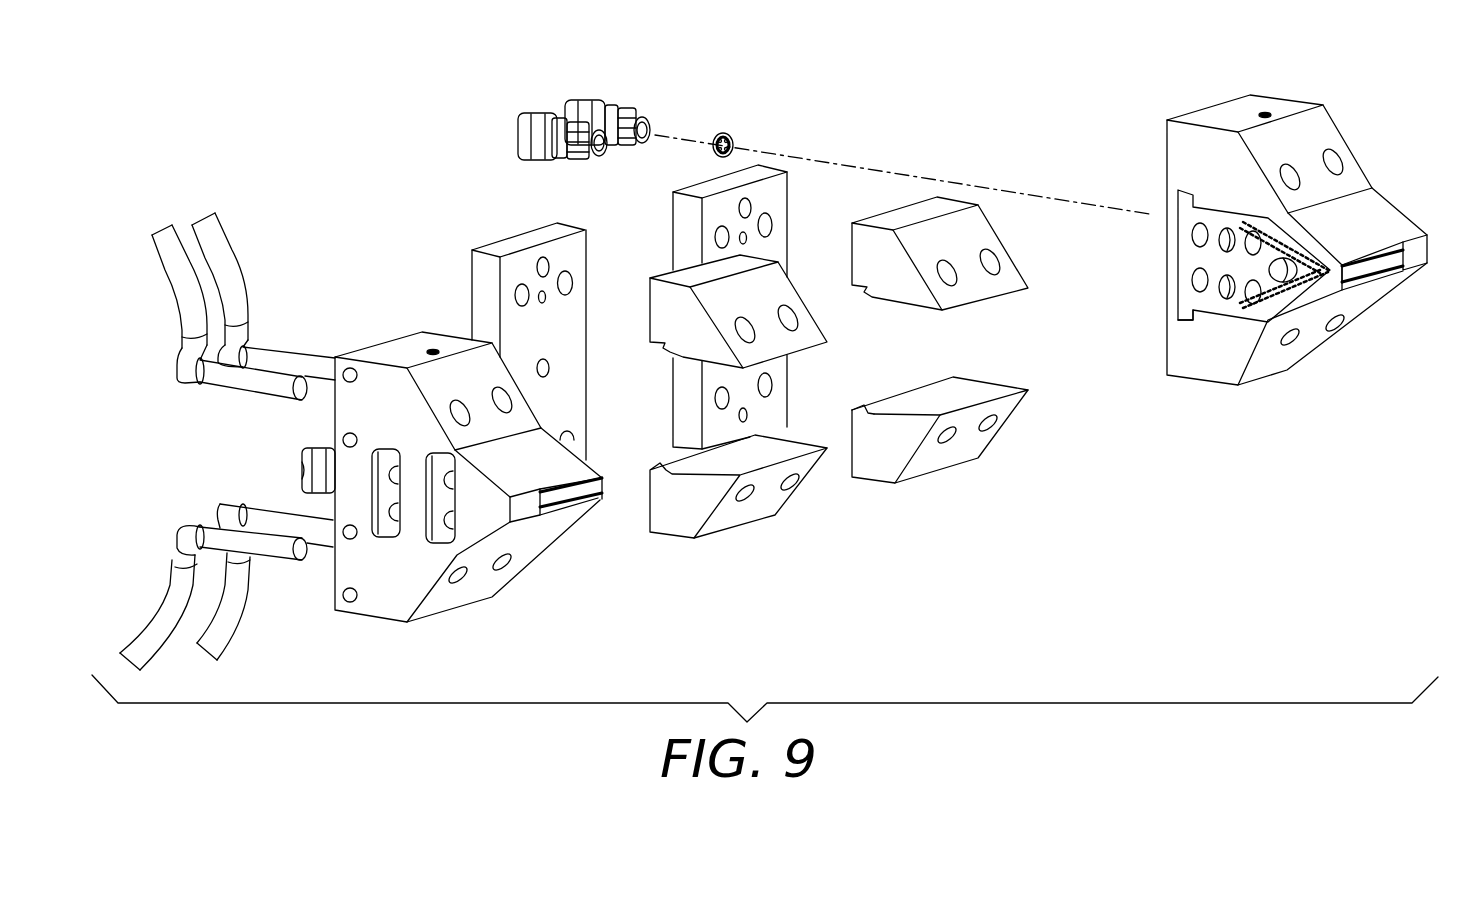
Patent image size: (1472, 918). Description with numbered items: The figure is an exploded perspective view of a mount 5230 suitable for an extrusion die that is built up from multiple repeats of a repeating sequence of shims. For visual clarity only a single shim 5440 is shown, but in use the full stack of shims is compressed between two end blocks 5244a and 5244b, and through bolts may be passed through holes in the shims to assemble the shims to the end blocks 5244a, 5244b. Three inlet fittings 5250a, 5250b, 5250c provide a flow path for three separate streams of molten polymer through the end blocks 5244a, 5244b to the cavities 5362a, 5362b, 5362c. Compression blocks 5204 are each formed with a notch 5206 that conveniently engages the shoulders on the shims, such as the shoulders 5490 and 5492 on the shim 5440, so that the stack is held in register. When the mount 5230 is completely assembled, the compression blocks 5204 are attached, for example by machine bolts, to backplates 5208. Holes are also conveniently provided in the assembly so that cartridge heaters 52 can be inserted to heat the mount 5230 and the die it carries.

The mount 5230 is at (303, 72).
The cartridge heaters 52 is at (272, 557).
The inlet fitting 5250a is at (320, 465).
The inlet fitting 5250b is at (533, 128).
The inlet fitting 5250c is at (590, 105).
The backplate 5208 is at (512, 247).
The end block 5244a is at (374, 606).
The notch 5206 is at (868, 413).
The compression block 5204 is at (959, 478).
The end block 5244b is at (1325, 352).
The shoulder 5490 is at (1200, 200).
The cavity 5362a is at (1222, 250).
The cavity 5362b is at (1230, 292).
The cavity 5362c is at (1283, 267).
The shoulder 5492 is at (1205, 335).
The shim 5440 is at (1257, 322).